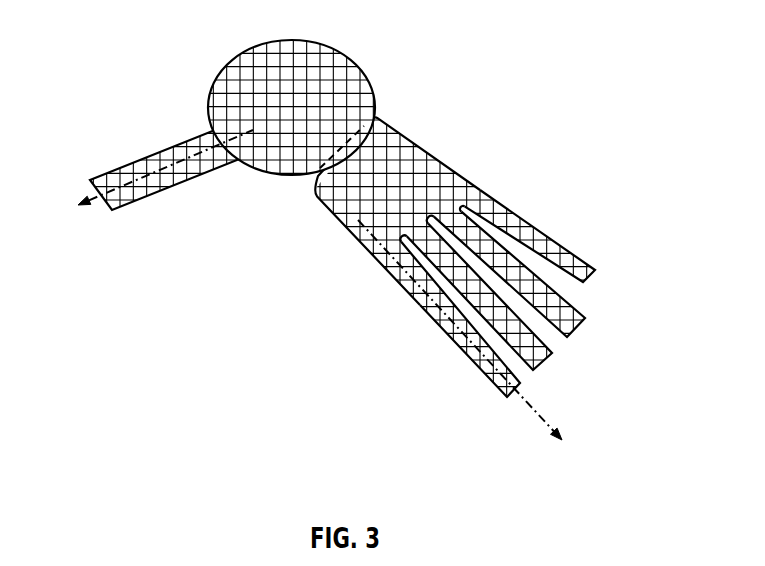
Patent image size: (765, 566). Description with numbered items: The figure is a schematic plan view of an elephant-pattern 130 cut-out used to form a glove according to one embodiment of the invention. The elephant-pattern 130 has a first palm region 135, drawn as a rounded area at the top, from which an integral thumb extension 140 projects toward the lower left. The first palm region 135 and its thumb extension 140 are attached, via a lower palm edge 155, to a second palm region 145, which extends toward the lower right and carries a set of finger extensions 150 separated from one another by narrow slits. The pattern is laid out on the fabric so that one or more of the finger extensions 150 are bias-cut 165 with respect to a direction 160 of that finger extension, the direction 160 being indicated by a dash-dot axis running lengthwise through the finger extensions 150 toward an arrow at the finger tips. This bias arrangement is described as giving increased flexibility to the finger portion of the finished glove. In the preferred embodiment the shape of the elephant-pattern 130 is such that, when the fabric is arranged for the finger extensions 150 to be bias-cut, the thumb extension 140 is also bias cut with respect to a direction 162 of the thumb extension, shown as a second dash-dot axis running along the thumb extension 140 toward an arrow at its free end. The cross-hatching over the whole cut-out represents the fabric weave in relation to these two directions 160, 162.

The elephant-pattern 130 is at (264, 474).
The first palm region 135 is at (240, 56).
The thumb extension 140 is at (163, 152).
The second palm region 145 is at (440, 147).
The finger extensions 150 is at (540, 223).
The lower palm edge 155 is at (370, 120).
The direction of finger extension 160 is at (535, 407).
The direction of thumb extension 162 is at (120, 187).
The bias-cut 165 is at (390, 273).